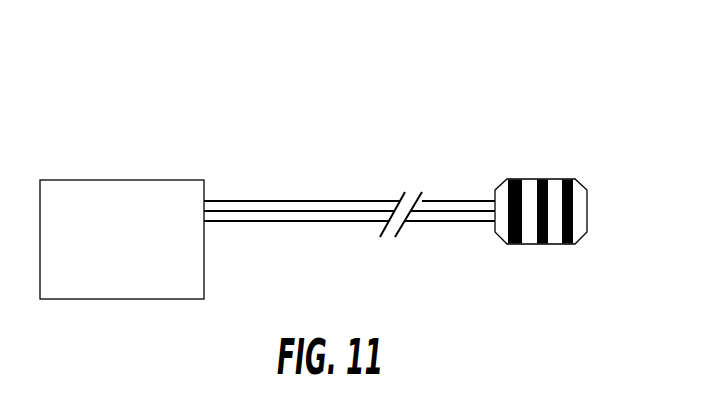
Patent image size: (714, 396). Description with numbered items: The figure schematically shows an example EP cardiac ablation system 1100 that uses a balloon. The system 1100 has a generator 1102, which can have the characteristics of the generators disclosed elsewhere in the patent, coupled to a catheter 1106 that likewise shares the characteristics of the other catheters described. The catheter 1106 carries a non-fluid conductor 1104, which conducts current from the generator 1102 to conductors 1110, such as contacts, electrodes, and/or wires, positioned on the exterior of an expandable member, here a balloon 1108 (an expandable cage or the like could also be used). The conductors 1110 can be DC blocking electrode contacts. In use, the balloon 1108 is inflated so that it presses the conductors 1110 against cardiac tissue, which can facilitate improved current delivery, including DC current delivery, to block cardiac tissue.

The system 1100 is at (458, 123).
The generator 1102 is at (65, 193).
The non-fluid conductor 1104 is at (352, 210).
The catheter 1106 is at (465, 224).
The balloon 1108 is at (583, 251).
The conductors 1110 is at (540, 245).